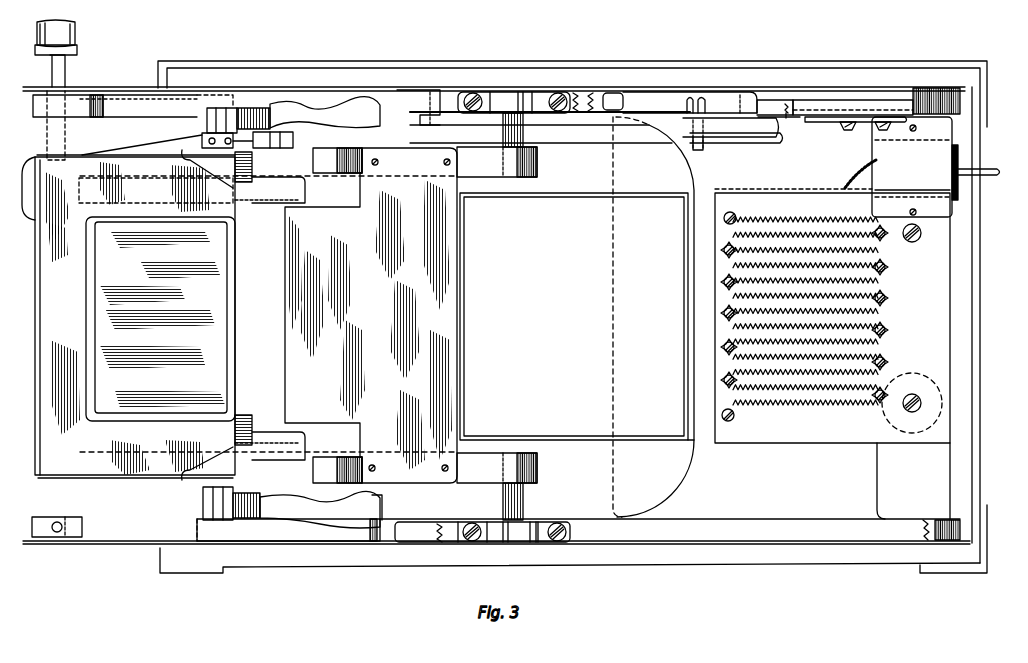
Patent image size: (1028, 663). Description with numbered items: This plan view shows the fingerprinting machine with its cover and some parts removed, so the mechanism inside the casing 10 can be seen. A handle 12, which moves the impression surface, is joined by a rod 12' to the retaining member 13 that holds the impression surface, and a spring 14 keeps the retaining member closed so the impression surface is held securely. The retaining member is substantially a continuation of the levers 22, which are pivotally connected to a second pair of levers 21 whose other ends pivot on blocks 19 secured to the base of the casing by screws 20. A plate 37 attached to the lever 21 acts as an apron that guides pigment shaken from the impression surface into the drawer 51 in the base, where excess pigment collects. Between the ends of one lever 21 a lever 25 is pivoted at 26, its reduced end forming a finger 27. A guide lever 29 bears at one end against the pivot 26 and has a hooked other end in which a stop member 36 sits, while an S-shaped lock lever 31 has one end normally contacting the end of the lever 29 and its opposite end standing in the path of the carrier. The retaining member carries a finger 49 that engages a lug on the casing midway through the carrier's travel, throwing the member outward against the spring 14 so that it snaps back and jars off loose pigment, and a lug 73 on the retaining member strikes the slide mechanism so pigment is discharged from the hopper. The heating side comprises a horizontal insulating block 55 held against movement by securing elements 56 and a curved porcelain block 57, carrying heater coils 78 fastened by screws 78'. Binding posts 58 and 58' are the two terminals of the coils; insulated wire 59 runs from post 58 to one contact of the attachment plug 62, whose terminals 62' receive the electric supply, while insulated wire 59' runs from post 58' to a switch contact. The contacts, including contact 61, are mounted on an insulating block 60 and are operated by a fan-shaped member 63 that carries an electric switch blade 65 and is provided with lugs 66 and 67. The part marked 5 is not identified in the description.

The casing bulge 5 is at (30, 190).
The casing 10 is at (268, 85).
The handle 12 is at (69, 37).
The rod 12' is at (89, 64).
The retaining member 13 is at (47, 296).
The spring 14 is at (268, 200).
The blocks 19 is at (500, 93).
The screws 20 is at (473, 93).
The second pair of levers 21 is at (480, 175).
The levers 22 is at (280, 185).
The lever 25 is at (567, 140).
The pivot 26 is at (440, 97).
The finger 27 is at (742, 143).
The guide lever 29 is at (606, 92).
The lock lever 31 is at (722, 98).
The stop member 36 is at (585, 92).
The plate 37 is at (445, 291).
The finger 49 is at (295, 140).
The drawer 51 is at (662, 440).
The insulating block 55 is at (937, 291).
The securing elements 56 is at (914, 242).
The curved porcelain block 57 is at (930, 400).
The binding post 58 is at (742, 340).
The binding post 58' is at (746, 209).
The insulated wire 59 is at (842, 174).
The insulated wire 59' is at (872, 140).
The insulating block 60 is at (890, 103).
The electric contact 61 is at (830, 112).
The attachment plug 62 is at (943, 170).
The terminals 62' is at (988, 159).
The fan-shaped member 63 is at (770, 102).
The electric switch blade 65 is at (762, 118).
The lug 66 is at (705, 128).
The lug 67 is at (690, 142).
The lug 73 is at (90, 108).
The electric heater coils 78 is at (805, 326).
The screws 78' is at (900, 314).